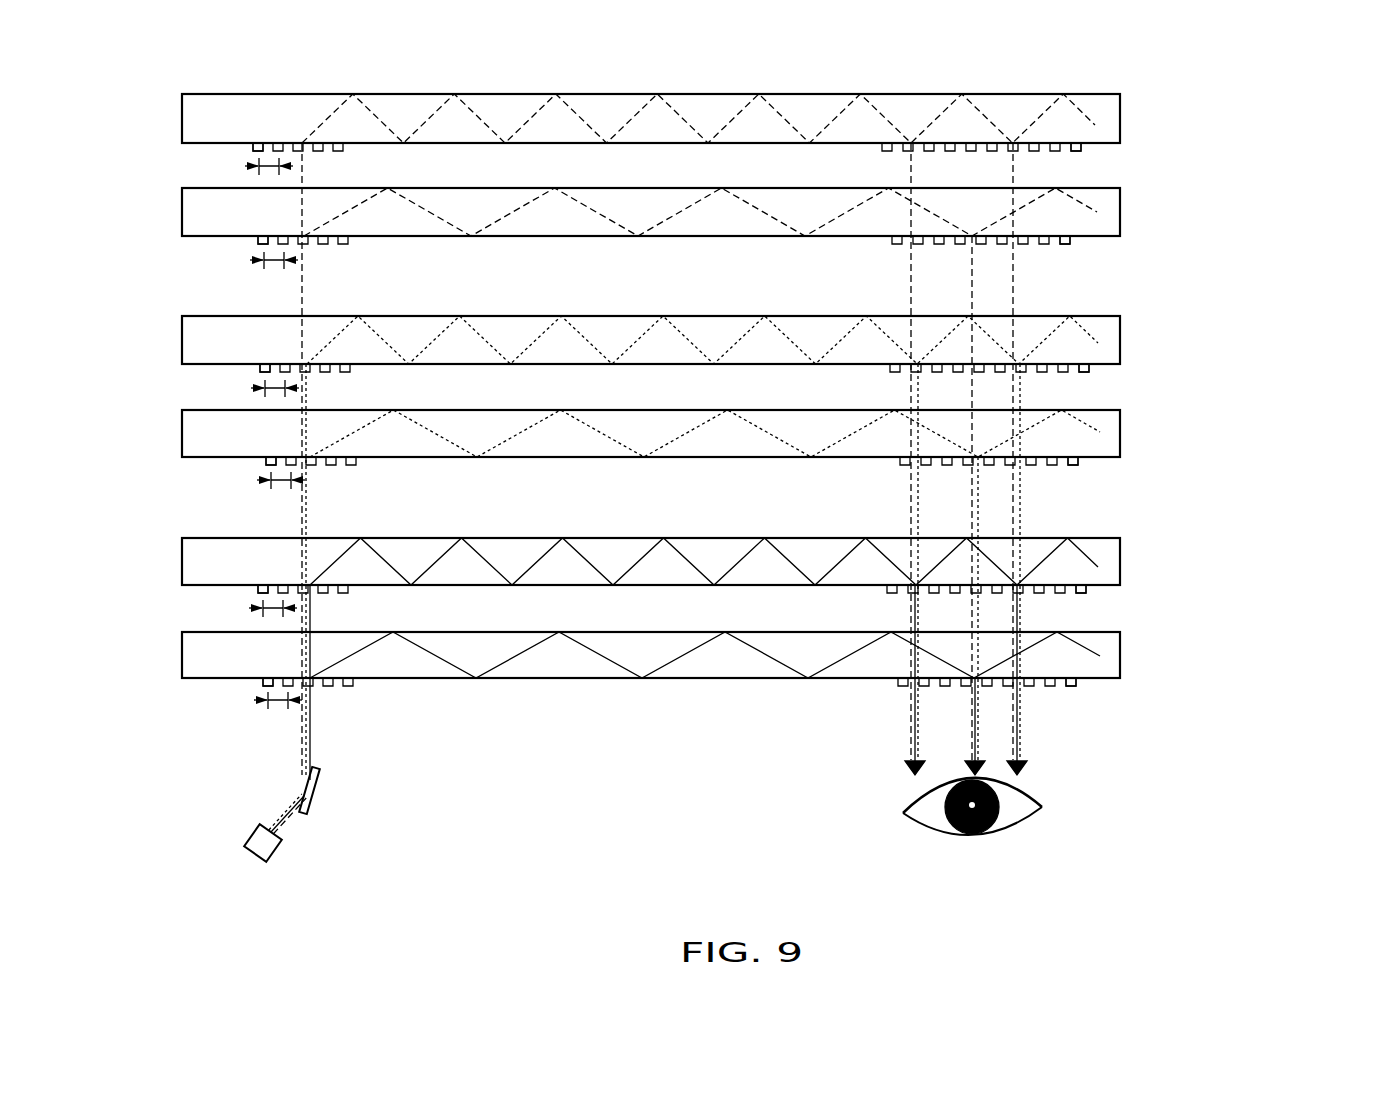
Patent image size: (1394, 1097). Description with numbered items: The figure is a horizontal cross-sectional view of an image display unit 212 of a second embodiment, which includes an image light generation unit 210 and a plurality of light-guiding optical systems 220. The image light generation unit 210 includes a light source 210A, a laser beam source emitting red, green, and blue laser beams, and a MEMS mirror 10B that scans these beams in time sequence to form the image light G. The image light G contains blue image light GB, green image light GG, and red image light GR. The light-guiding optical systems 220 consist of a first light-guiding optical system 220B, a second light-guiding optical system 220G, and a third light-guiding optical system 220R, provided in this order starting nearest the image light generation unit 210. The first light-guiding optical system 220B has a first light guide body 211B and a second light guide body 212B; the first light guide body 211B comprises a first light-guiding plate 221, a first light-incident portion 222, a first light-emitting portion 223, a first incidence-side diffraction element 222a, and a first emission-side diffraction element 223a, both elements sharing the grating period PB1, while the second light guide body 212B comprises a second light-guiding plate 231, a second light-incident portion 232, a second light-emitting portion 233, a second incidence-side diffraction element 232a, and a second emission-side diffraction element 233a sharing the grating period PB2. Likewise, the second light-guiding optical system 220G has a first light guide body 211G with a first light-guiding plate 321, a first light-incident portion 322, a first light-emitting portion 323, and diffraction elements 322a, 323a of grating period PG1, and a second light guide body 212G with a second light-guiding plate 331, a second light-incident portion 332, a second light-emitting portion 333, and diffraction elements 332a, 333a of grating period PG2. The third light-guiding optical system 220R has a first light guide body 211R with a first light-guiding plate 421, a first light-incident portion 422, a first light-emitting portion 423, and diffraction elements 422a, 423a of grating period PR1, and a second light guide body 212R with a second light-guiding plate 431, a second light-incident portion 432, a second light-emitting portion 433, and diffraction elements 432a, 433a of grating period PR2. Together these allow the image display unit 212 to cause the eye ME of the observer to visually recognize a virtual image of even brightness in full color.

The image display unit 212 is at (1178, 66).
The light-guiding optical systems 220 is at (1307, 147).
The third light-guiding optical system 220R is at (1224, 92).
The second light-guiding optical system 220G is at (1224, 314).
The first light-guiding optical system 220B is at (1224, 536).
The second light guide body 212R is at (1127, 113).
The first light guide body 211R is at (1127, 215).
The second light guide body 212G is at (1127, 341).
The first light guide body 211G is at (1127, 436).
The second light guide body 212B is at (1127, 561).
The first light guide body 211B is at (1127, 656).
The second light-guiding plate 431 is at (188, 113).
The second light-incident portion 432 is at (234, 160).
The second incidence-side diffraction element 432a is at (256, 148).
The second light-emitting portion 433 is at (1088, 160).
The second emission-side diffraction element 433a is at (1078, 148).
The first light-guiding plate 421 is at (188, 210).
The first light-incident portion 422 is at (236, 256).
The first incidence-side diffraction element 422a is at (260, 242).
The first light-emitting portion 423 is at (1086, 253).
The first emission-side diffraction element 423a is at (1068, 242).
The second light-guiding plate 331 is at (188, 335).
The second light-incident portion 332 is at (238, 380).
The second incidence-side diffraction element 332a is at (262, 370).
The second light-emitting portion 333 is at (1088, 380).
The second emission-side diffraction element 333a is at (1086, 369).
The first light-guiding plate 321 is at (188, 432).
The first light-incident portion 322 is at (240, 476).
The first incidence-side diffraction element 322a is at (268, 463).
The first light-emitting portion 323 is at (1086, 475).
The first emission-side diffraction element 323a is at (1076, 463).
The second light-guiding plate 231 is at (188, 555).
The second light-incident portion 232 is at (236, 600).
The second incidence-side diffraction element 232a is at (260, 590).
The second light-emitting portion 233 is at (1088, 600).
The second emission-side diffraction element 233a is at (1084, 590).
The first light-guiding plate 221 is at (188, 655).
The first light-incident portion 222 is at (240, 695).
The first incidence-side diffraction element 222a is at (265, 684).
The first light-emitting portion 223 is at (1086, 695).
The first emission-side diffraction element 223a is at (1075, 684).
The grating period PR1 is at (282, 270).
The grating period PR2 is at (278, 175).
The grating period PG1 is at (289, 490).
The grating period PG2 is at (283, 398).
The grating period PB1 is at (287, 709).
The grating period PB2 is at (282, 619).
The image light G is at (410, 720).
The red image light GR is at (309, 760).
The green image light GG is at (309, 744).
The blue image light GB is at (309, 727).
The image light generation unit 210 is at (362, 816).
The light source 210A is at (282, 852).
The MEMS mirror 10B is at (317, 797).
The eye ME is at (1022, 812).